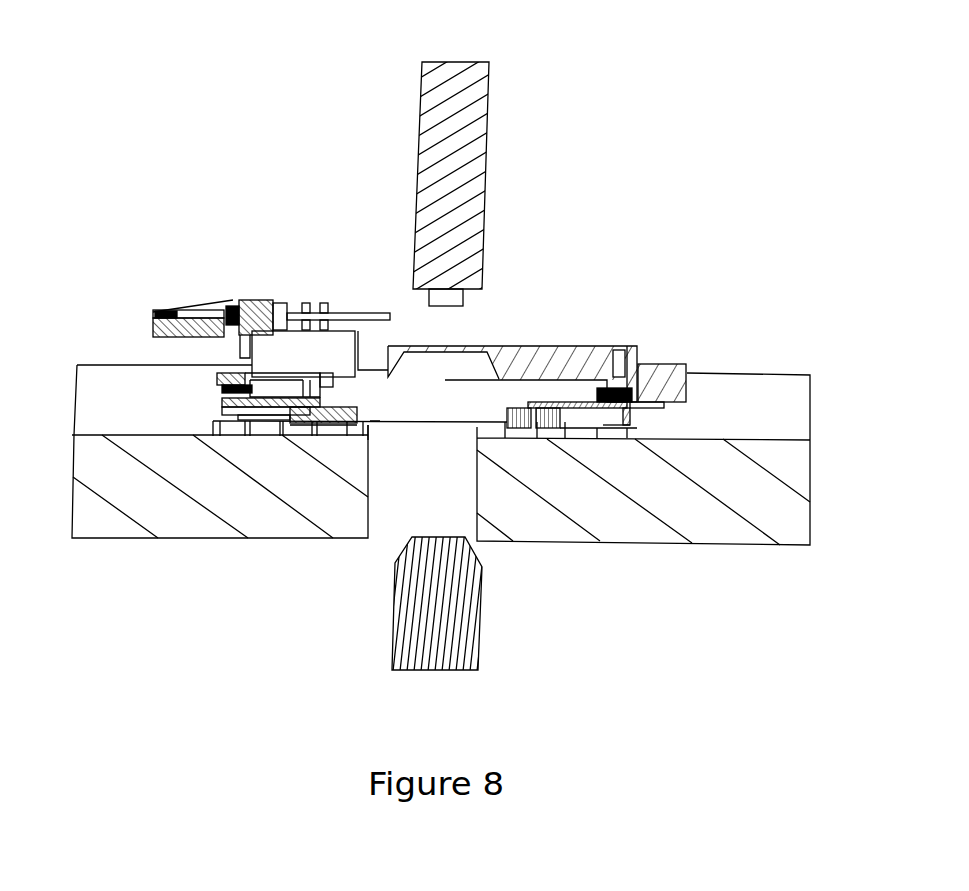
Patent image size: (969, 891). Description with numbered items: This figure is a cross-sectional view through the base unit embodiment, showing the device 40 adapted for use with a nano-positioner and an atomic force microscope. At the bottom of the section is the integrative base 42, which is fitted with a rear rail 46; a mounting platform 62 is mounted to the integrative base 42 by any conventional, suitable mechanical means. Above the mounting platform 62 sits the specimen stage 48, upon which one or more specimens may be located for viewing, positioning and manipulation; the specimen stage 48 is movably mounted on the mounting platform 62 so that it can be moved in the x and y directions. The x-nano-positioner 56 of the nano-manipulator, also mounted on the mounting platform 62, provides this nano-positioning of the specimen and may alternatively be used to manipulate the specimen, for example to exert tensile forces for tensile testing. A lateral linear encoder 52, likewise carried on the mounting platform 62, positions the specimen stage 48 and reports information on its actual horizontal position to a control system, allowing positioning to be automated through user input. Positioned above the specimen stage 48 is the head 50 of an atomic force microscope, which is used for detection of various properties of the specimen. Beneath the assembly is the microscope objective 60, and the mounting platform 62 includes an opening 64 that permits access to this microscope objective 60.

The device 40 is at (125, 653).
The integrative base 42 is at (795, 512).
The rear rail 46 is at (103, 393).
The specimen stage 48 is at (583, 355).
The head of an atomic force microscope 50 is at (475, 177).
The lateral linear encoder 52 is at (678, 369).
The x-nano-positioner 56 is at (263, 300).
The microscope objective 60 is at (468, 630).
The mounting platform 62 is at (580, 433).
The opening 64 is at (390, 440).